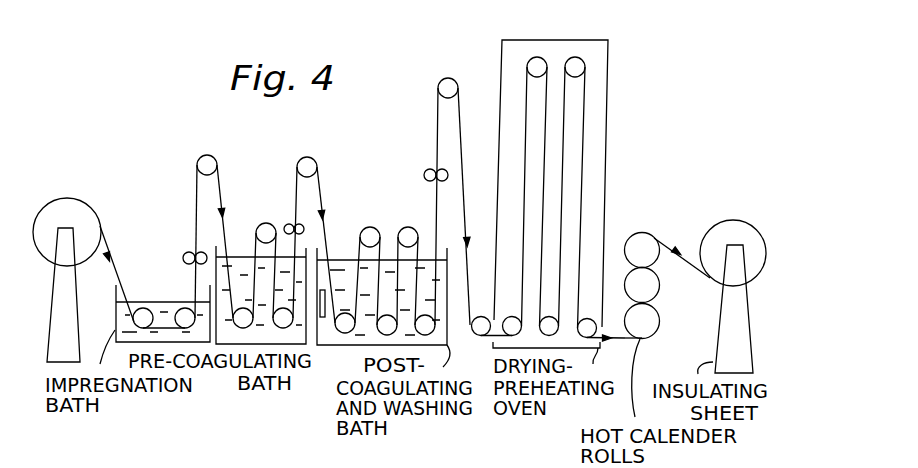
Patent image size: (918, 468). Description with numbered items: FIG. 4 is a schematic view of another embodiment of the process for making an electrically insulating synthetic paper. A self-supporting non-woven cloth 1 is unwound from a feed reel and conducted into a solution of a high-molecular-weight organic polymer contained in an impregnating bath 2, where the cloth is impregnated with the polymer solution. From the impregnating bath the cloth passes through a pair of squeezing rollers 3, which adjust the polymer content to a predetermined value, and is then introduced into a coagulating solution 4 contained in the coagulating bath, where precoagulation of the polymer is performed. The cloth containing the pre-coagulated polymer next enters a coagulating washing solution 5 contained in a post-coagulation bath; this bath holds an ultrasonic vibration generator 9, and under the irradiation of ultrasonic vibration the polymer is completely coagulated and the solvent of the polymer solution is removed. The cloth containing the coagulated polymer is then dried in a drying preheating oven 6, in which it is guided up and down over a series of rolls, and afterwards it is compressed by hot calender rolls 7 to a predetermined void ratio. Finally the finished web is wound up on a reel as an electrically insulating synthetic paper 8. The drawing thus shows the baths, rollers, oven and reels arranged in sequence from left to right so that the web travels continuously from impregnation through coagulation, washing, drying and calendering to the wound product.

The fibrous sheet web 1 is at (113, 232).
The pre-coagulating bath 2 is at (156, 302).
The squeezing rollers 3 is at (189, 256).
The coagulating solution 4 is at (242, 257).
The coagulating washing solution 5 is at (343, 264).
The drying preheating oven 6 is at (507, 98).
The hot calender rolls 7 is at (642, 243).
The electrically insulating synthetic paper 8 is at (672, 238).
The ultrasonic vibration generator 9 is at (322, 317).